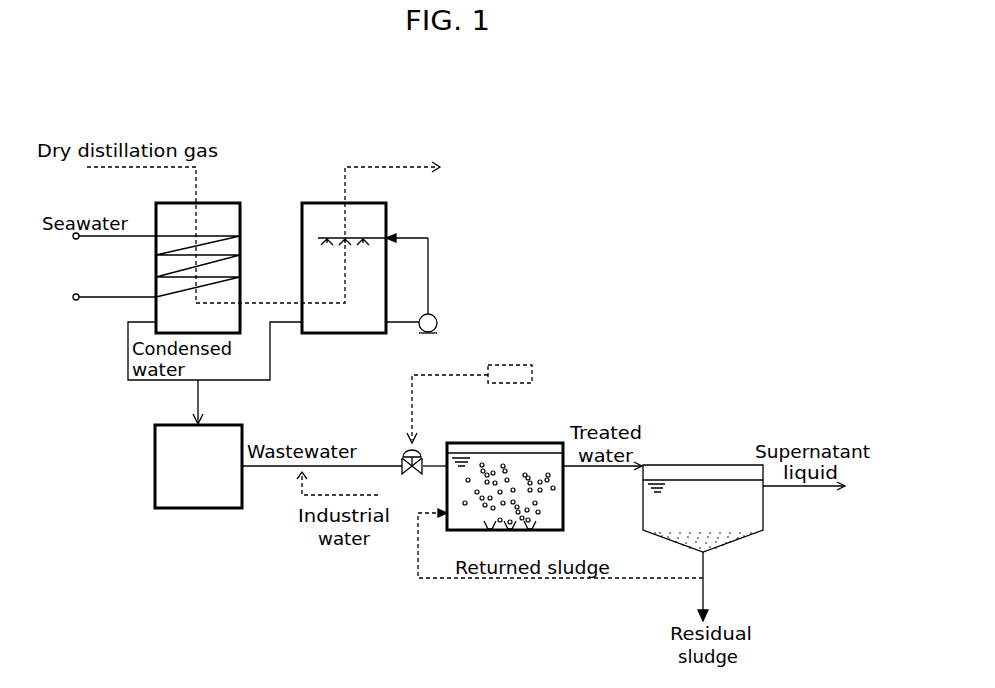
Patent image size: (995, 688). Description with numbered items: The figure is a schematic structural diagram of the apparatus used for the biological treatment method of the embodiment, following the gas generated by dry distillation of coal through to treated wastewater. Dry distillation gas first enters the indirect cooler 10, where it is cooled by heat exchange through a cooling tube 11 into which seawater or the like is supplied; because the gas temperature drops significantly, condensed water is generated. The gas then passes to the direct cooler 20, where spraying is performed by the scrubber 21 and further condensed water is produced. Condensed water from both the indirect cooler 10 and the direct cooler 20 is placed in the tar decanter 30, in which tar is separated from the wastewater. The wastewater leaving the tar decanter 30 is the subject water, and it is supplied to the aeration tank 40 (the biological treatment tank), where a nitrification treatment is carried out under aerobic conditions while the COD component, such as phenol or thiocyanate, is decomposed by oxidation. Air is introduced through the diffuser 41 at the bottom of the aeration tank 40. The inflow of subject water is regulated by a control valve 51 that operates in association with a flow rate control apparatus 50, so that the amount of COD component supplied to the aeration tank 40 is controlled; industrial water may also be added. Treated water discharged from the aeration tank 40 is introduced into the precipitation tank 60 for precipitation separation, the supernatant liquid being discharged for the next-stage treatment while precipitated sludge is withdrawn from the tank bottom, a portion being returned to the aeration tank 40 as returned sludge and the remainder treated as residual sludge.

The indirect cooler 10 is at (220, 203).
The cooling tube 11 is at (227, 278).
The direct cooler 20 is at (315, 203).
The scrubber 21 is at (318, 238).
The tar decanter 30 is at (155, 438).
The aeration tank 40 is at (542, 443).
The air diffuser 41 is at (537, 526).
The flow rate control apparatus 50 is at (518, 365).
The control valve 51 is at (421, 462).
The precipitation tank 60 is at (732, 464).